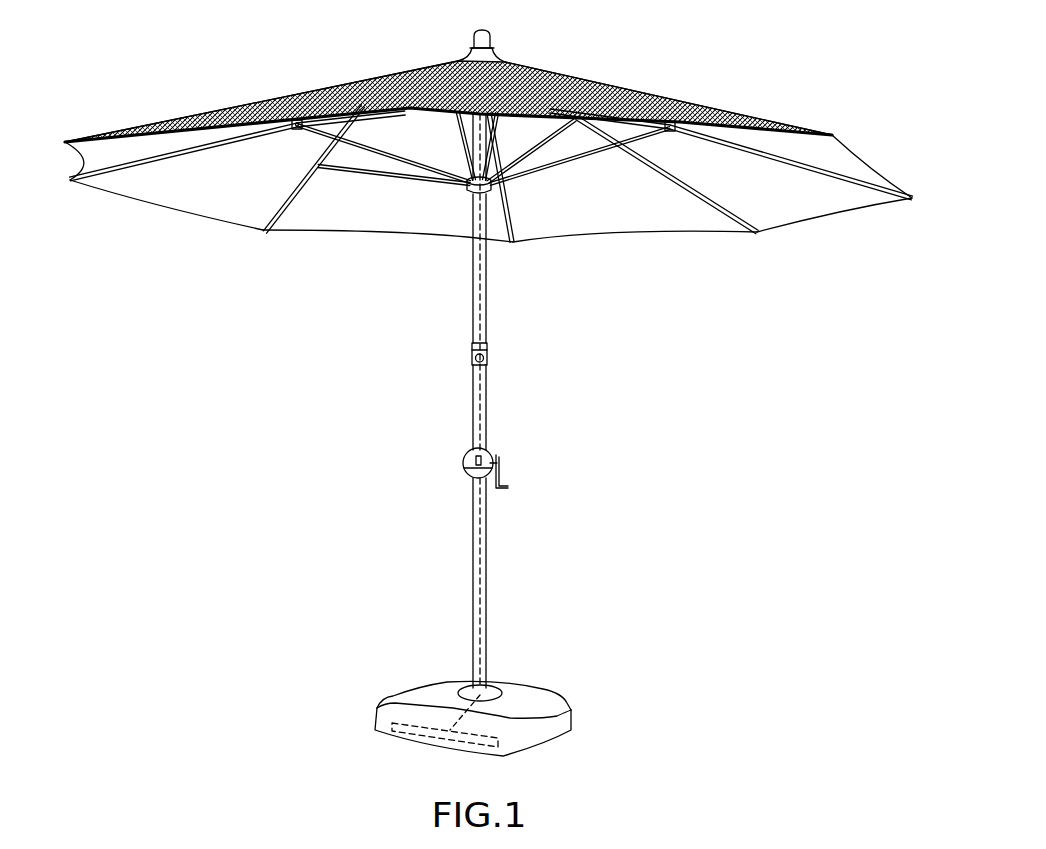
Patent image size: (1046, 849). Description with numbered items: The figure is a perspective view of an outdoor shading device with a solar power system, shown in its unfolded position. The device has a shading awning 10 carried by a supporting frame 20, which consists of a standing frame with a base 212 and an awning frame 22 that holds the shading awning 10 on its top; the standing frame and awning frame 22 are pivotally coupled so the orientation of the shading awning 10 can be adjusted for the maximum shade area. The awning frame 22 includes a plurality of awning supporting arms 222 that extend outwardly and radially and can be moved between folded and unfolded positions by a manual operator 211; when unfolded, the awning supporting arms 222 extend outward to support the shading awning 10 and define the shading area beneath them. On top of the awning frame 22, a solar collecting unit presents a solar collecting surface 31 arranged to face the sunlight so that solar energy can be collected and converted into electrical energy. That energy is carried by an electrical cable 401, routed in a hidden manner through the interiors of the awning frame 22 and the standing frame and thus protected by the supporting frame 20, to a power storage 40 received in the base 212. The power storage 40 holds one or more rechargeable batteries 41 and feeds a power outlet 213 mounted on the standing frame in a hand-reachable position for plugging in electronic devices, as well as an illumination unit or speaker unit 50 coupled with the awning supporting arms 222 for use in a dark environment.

The shading awning 10 is at (584, 208).
The supporting frame 20 is at (684, 462).
The manual operator 211 is at (490, 467).
The base 212 is at (565, 722).
The power outlet 213 is at (488, 365).
The awning frame 22 is at (848, 315).
The awning supporting arms 222 is at (307, 200).
The solar collecting surface 31 is at (625, 75).
The power storage 40 is at (295, 707).
The electrical cable 401 is at (478, 540).
The rechargeable batteries 41 is at (410, 730).
The illumination unit or speaker unit 50 is at (692, 205).